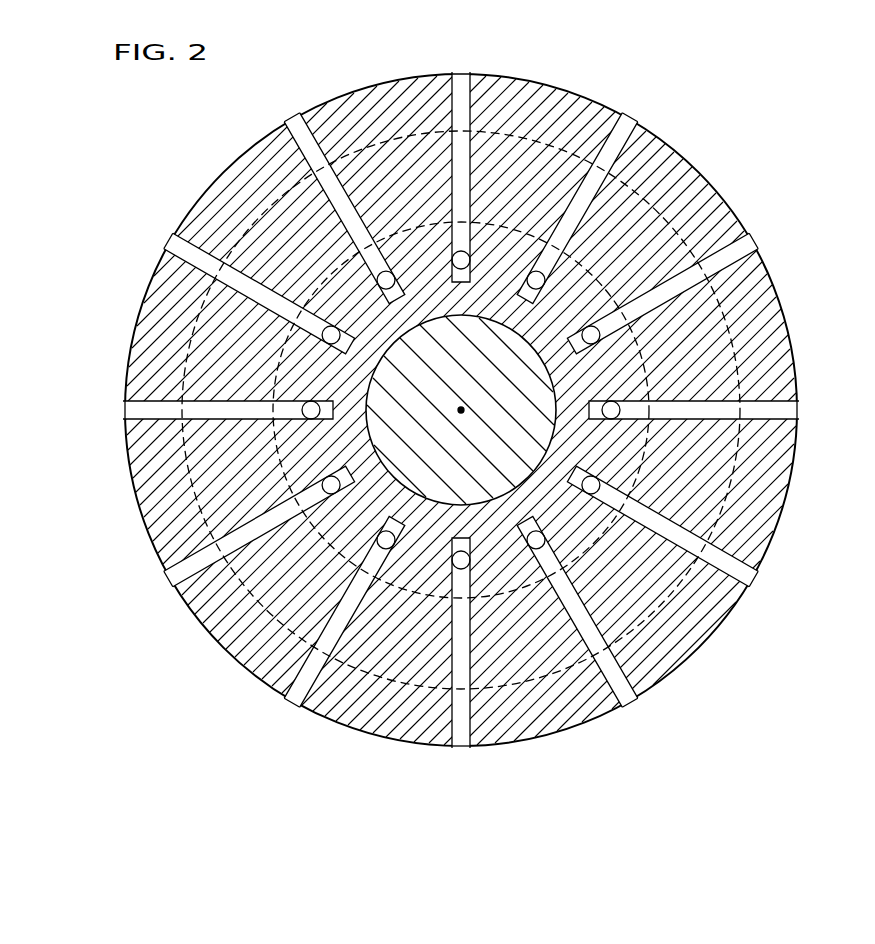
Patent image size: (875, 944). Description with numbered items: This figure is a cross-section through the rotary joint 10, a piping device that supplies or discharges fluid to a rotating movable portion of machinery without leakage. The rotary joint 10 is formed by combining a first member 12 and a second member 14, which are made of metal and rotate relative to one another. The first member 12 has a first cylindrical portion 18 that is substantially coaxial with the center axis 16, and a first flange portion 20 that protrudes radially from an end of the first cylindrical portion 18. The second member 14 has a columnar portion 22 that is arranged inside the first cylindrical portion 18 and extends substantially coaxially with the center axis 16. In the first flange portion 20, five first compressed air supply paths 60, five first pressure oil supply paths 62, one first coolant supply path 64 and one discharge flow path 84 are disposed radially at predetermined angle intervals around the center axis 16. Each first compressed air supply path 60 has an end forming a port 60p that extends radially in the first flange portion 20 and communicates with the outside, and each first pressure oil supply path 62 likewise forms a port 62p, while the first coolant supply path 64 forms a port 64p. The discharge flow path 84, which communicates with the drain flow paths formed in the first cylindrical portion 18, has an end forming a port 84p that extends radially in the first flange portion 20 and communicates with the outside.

The rotary joint 10 is at (784, 89).
The first member 12 is at (700, 155).
The second member 14 is at (723, 502).
The center axis 16 is at (461, 410).
The first cylindrical portion 18 is at (647, 378).
The first flange portion 20 is at (780, 297).
The columnar portion 22 is at (493, 507).
The first compressed air supply path 60 is at (147, 402).
The port 60p is at (120, 408).
The first pressure oil supply path 62 is at (300, 147).
The port 62p is at (293, 119).
The first coolant supply path 64 is at (188, 253).
The port 64p is at (172, 242).
The discharge flow path 84 is at (467, 727).
The port 84p is at (463, 748).